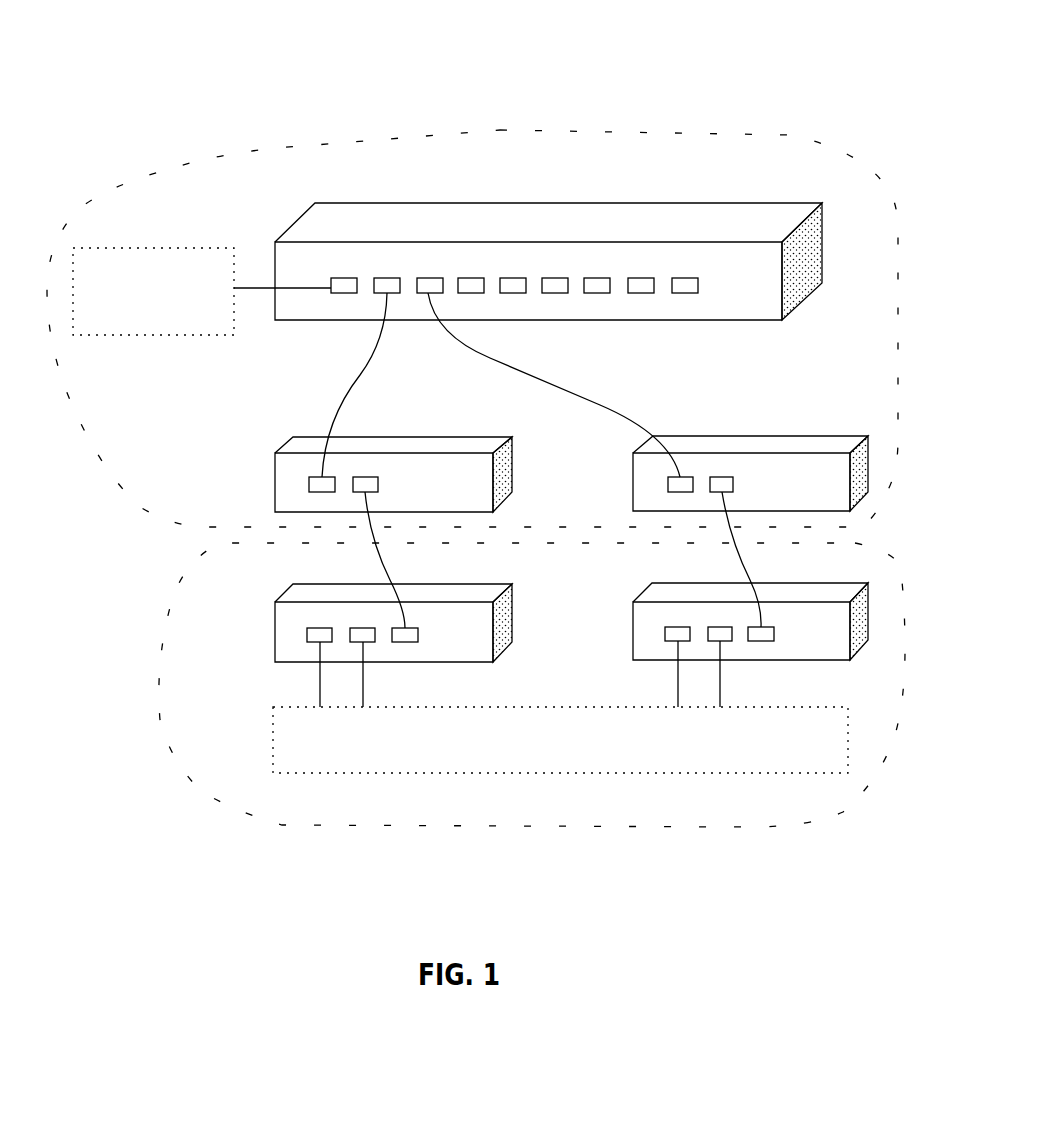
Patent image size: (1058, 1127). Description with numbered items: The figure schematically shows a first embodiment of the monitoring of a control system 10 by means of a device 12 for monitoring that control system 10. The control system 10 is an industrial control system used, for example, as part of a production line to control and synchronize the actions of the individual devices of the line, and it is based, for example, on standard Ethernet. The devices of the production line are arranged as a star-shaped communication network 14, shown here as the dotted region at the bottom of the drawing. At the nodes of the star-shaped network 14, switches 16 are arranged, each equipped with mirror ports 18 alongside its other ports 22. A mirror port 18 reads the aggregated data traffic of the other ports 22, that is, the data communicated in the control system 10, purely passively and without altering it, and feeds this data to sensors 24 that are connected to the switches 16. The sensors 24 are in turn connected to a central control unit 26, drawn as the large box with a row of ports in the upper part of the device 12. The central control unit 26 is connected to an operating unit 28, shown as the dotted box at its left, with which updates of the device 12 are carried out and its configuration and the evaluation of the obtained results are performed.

The control system 10 is at (160, 700).
The device for monitoring the control system 12 is at (497, 130).
The star-shaped communication network 14 is at (757, 772).
The switch 16 is at (293, 623).
The mirror port 18 is at (777, 633).
The port 22 is at (315, 640).
The sensor 24 is at (290, 468).
The central control unit 26 is at (720, 225).
The operating unit 28 is at (173, 250).